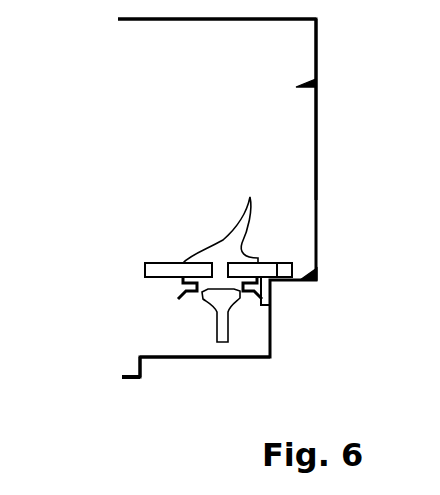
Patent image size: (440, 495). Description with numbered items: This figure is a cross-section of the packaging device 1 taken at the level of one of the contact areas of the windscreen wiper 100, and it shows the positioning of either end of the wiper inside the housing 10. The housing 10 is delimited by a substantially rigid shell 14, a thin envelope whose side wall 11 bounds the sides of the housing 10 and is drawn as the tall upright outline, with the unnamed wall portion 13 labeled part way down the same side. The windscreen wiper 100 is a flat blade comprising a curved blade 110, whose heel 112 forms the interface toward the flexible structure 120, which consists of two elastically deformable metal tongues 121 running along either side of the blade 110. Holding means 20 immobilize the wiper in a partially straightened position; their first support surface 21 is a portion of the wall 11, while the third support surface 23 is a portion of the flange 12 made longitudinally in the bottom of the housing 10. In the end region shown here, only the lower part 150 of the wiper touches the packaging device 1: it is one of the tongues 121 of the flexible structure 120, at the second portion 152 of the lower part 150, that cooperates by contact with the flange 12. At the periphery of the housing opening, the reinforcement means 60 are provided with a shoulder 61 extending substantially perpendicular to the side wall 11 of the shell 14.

The packaging device 1 is at (192, 358).
The housing 10 is at (185, 137).
The wall 11 is at (237, 19).
The flange 12 is at (299, 278).
The housing side wall 13 is at (316, 87).
The shell 14 is at (318, 148).
The holding means 20 is at (270, 263).
The first support surface 21 is at (168, 19).
The third support surface 23 is at (302, 276).
The reinforcement means 60 is at (138, 360).
The shoulder 61 is at (128, 375).
The windscreen wiper 100 is at (203, 241).
The blade 110 is at (183, 295).
The heel 112 is at (253, 296).
The flexible structure 120 is at (145, 270).
The tongue 121 is at (287, 263).
The lower part 150 is at (245, 318).
The second portion 152 is at (262, 293).